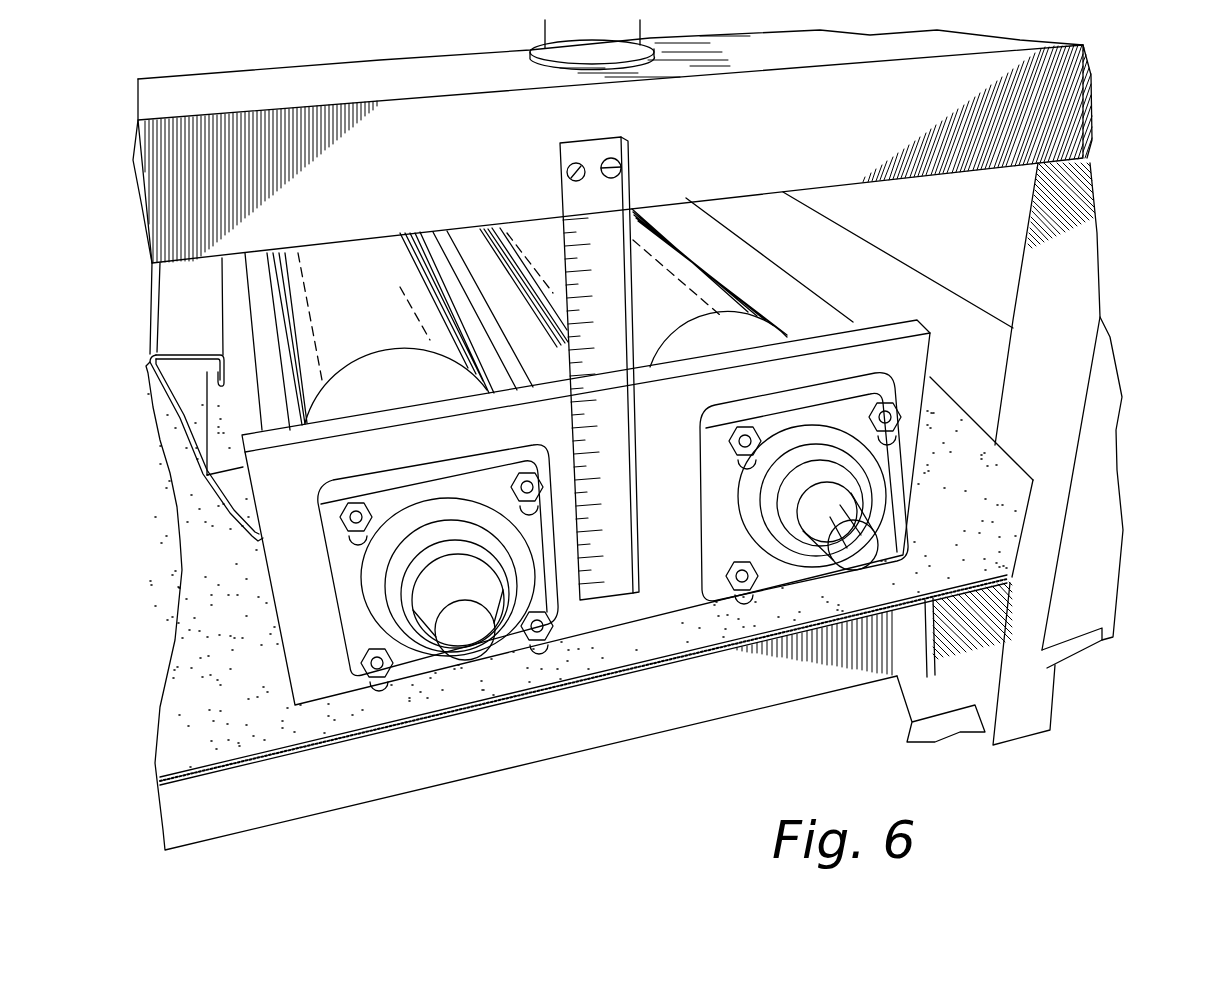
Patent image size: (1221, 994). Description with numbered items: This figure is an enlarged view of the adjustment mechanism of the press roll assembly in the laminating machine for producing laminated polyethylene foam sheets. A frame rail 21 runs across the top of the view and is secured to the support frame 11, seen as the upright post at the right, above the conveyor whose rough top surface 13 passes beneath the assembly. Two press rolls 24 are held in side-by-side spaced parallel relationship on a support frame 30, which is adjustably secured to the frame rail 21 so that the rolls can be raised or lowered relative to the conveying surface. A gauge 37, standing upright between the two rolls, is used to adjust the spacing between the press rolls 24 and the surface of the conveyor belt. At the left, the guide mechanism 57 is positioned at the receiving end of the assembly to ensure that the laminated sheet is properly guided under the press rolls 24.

The support frame 11 is at (1052, 400).
The rough top surface 13 is at (240, 712).
The frame rail 21 is at (383, 178).
The press roll 24 is at (368, 300).
The support frame 30 is at (657, 580).
The gauge 37 is at (613, 477).
The guide mechanism 57 is at (185, 380).